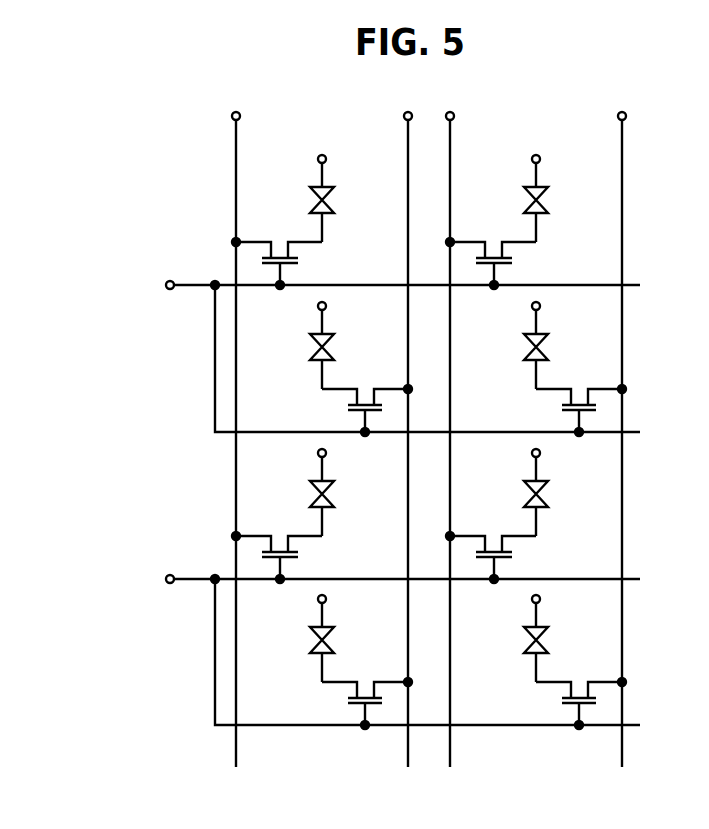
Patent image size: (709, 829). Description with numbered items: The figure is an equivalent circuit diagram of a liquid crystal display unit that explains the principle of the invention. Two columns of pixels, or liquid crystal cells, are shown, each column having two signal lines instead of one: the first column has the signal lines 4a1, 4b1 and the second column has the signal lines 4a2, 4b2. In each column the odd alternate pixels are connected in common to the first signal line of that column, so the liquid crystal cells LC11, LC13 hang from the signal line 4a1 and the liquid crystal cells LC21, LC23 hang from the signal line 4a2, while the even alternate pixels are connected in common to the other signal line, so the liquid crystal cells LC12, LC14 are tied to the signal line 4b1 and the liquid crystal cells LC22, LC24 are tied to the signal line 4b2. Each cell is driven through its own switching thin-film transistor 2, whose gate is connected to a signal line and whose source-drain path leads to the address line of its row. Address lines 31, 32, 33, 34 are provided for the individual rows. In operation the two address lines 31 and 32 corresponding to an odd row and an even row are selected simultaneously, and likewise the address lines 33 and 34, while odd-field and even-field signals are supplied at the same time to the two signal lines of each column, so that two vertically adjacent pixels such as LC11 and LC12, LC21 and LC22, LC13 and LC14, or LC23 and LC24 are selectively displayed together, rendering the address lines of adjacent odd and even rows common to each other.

The switching thin-film transistor 2 is at (282, 264).
The address line 31 is at (387, 283).
The address line 32 is at (414, 364).
The address line 33 is at (388, 580).
The address line 34 is at (411, 658).
The signal line 4a1 is at (234, 429).
The signal line 4b1 is at (403, 429).
The signal line 4a2 is at (455, 429).
The signal line 4b2 is at (627, 429).
The liquid crystal cell LC11 is at (345, 198).
The liquid crystal cell LC12 is at (345, 345).
The liquid crystal cell LC13 is at (345, 492).
The liquid crystal cell LC14 is at (345, 638).
The liquid crystal cell LC21 is at (559, 198).
The liquid crystal cell LC22 is at (559, 345).
The liquid crystal cell LC23 is at (559, 492).
The liquid crystal cell LC24 is at (559, 638).